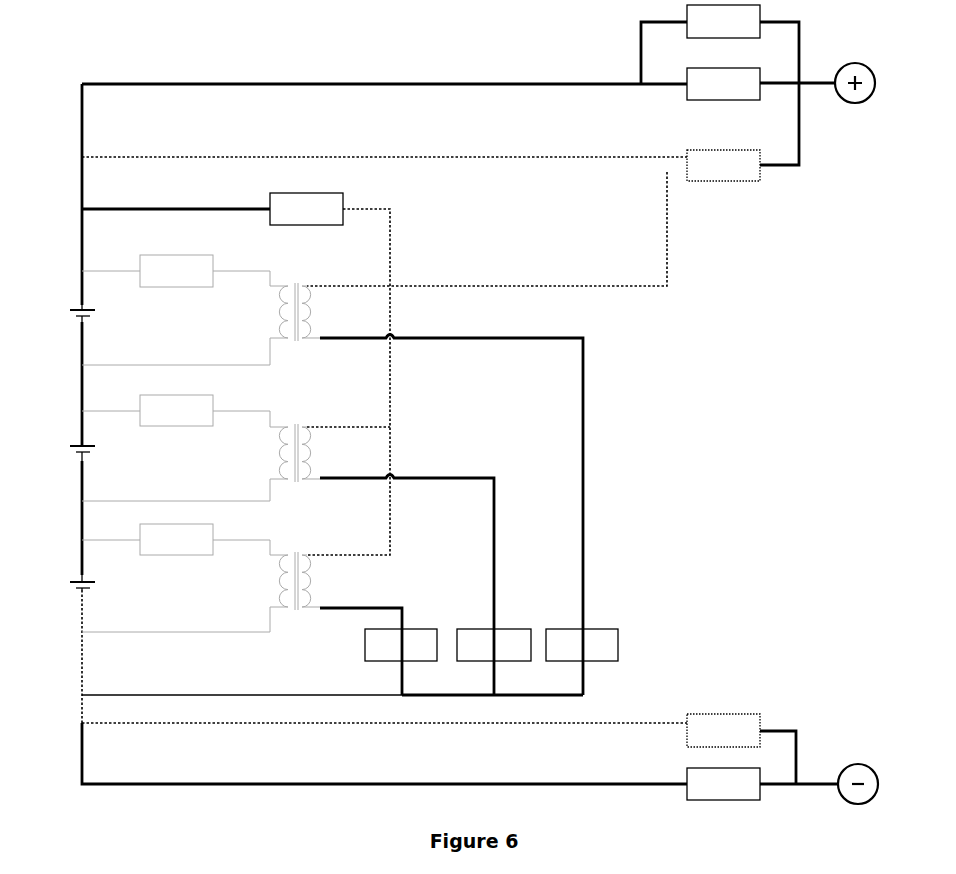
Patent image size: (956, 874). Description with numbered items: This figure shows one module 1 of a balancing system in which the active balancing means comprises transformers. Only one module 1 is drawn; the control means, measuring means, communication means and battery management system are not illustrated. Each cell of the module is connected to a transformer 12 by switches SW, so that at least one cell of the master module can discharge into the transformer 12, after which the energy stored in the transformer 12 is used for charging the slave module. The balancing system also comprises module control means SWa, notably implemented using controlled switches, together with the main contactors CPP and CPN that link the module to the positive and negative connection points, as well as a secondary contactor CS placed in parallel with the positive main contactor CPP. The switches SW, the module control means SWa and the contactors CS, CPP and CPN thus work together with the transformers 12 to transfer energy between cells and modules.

The battery cell stack 1 is at (82, 302).
The transformer 12 is at (312, 441).
The switches SW is at (379, 427).
The module control means SWa is at (723, 448).
The secondary contactor CS is at (723, 21).
The main contactor CPP is at (723, 84).
The main contactor CPN is at (723, 784).